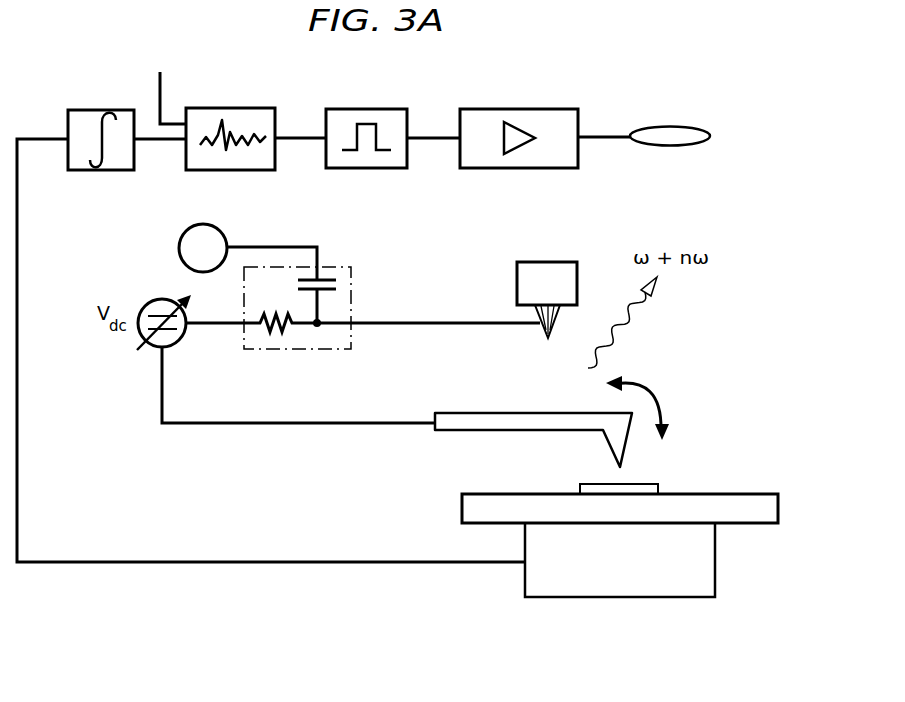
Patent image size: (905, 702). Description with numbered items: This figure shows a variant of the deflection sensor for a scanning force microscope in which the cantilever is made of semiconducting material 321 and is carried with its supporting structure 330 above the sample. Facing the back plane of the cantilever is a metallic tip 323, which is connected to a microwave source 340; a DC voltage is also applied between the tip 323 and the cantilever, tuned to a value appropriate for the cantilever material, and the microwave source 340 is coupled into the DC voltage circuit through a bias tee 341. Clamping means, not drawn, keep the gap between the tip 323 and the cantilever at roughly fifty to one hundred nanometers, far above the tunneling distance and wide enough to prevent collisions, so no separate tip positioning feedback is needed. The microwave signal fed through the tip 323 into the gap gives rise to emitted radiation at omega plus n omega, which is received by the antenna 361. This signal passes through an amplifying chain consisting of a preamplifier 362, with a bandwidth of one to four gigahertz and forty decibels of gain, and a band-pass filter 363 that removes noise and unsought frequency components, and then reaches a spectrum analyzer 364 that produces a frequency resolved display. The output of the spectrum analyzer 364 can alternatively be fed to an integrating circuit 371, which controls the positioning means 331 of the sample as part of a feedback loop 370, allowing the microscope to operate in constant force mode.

The integrating circuit 371 is at (80, 108).
The spectrum analyzer 364 is at (250, 108).
The band-pass filter 363 is at (384, 109).
The preamplifier 362 is at (553, 109).
The antenna 361 is at (686, 127).
The microwave source 340 is at (186, 228).
The bias tee 341 is at (338, 267).
The metallic tip 323 is at (545, 336).
The cantilever probe assembly 330 is at (515, 448).
The semiconducting material 321 is at (437, 467).
The positioning means 331 is at (698, 597).
The feedback loop 370 is at (178, 600).